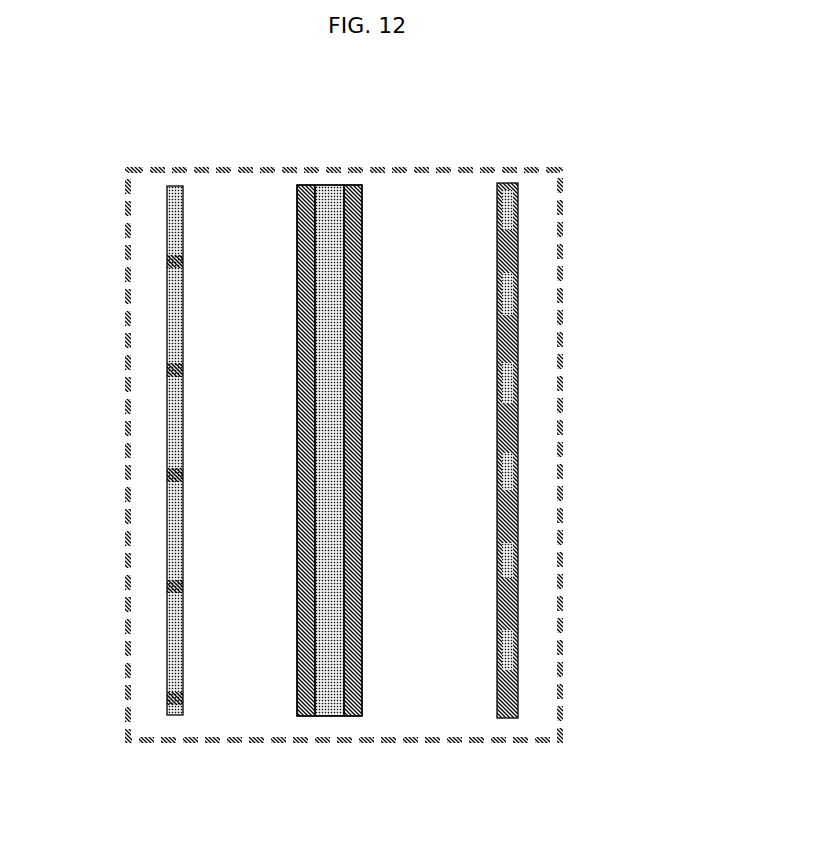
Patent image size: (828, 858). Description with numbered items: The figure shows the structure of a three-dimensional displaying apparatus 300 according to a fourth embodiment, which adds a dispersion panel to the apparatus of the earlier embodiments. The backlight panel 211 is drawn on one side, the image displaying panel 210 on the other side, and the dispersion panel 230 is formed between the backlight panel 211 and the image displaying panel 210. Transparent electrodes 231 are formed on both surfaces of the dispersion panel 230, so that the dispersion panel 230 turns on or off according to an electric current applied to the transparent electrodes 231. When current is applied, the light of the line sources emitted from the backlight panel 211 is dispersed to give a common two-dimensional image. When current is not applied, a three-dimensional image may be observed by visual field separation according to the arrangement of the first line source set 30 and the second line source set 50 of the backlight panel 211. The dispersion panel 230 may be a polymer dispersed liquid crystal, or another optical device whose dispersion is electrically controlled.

The 3-dimensional displaying apparatus 300 is at (573, 356).
The backlight panel 211 is at (122, 403).
The first line source set 30 is at (156, 235).
The second line source set 50 is at (156, 267).
The dispersion panel 230 is at (316, 482).
The transparent electrode 231 is at (343, 731).
The image displaying panel 210 is at (507, 172).